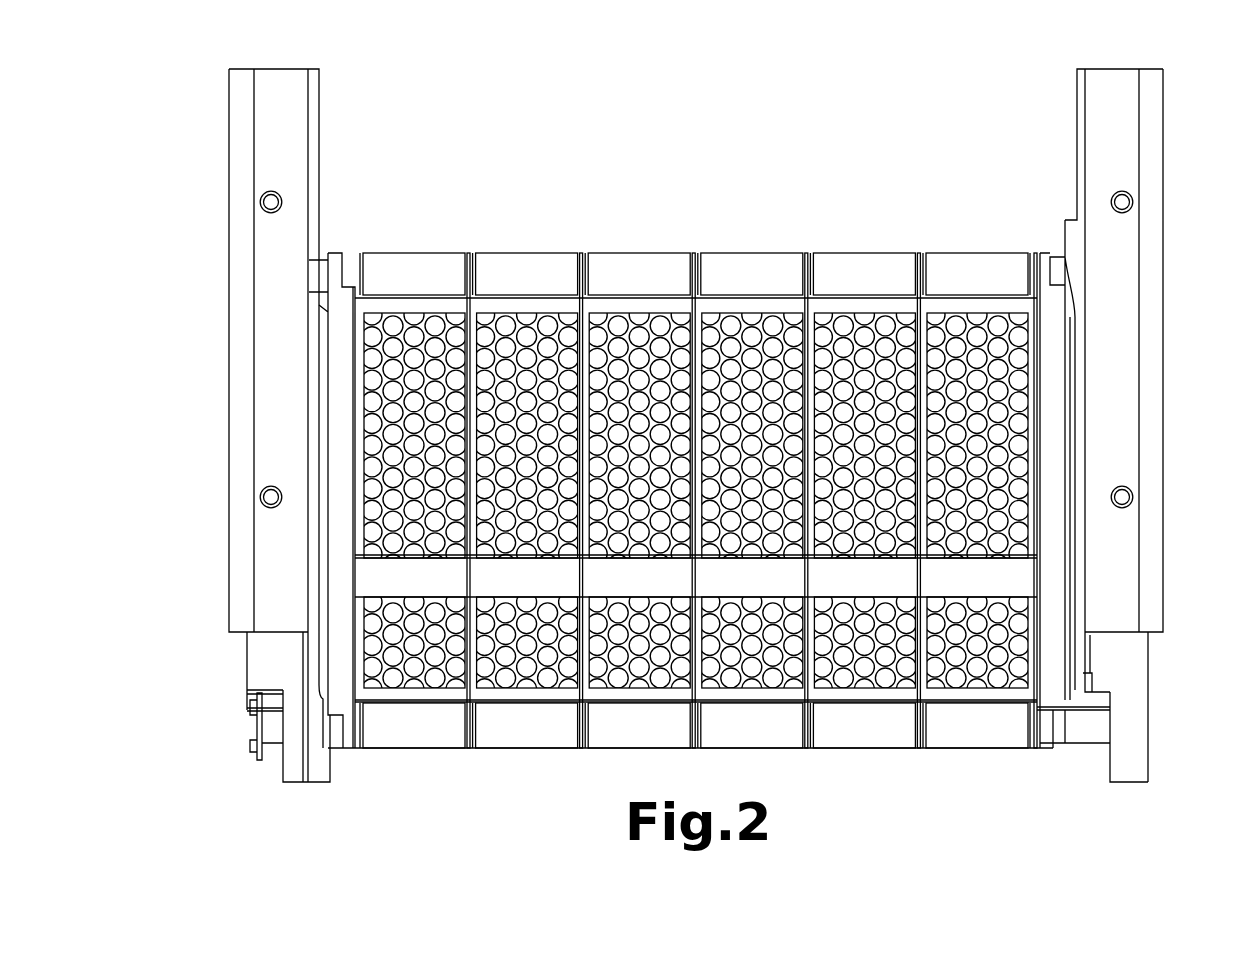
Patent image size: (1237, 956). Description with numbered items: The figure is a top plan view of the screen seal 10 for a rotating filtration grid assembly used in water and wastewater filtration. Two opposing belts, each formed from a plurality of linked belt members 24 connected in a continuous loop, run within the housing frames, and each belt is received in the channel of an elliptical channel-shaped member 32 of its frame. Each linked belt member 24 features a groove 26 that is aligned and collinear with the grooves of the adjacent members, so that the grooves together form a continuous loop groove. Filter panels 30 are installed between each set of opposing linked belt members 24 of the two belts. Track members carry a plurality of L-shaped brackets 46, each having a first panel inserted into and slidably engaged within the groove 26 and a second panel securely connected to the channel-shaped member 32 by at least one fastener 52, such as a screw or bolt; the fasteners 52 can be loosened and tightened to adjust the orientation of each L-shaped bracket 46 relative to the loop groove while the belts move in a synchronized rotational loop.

The seal 10 is at (575, 160).
The linked belt member 24 is at (332, 767).
The groove 26 is at (312, 771).
The filter panel 30 is at (643, 313).
The channel-shaped member 32 is at (242, 428).
The L-shaped bracket 46 is at (281, 123).
The fastener 52 is at (1122, 497).